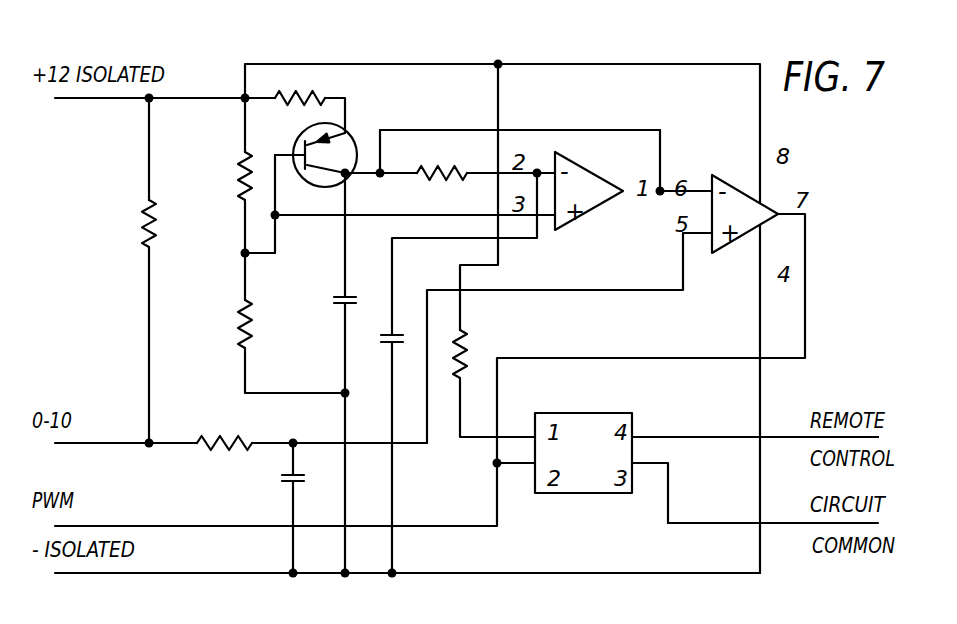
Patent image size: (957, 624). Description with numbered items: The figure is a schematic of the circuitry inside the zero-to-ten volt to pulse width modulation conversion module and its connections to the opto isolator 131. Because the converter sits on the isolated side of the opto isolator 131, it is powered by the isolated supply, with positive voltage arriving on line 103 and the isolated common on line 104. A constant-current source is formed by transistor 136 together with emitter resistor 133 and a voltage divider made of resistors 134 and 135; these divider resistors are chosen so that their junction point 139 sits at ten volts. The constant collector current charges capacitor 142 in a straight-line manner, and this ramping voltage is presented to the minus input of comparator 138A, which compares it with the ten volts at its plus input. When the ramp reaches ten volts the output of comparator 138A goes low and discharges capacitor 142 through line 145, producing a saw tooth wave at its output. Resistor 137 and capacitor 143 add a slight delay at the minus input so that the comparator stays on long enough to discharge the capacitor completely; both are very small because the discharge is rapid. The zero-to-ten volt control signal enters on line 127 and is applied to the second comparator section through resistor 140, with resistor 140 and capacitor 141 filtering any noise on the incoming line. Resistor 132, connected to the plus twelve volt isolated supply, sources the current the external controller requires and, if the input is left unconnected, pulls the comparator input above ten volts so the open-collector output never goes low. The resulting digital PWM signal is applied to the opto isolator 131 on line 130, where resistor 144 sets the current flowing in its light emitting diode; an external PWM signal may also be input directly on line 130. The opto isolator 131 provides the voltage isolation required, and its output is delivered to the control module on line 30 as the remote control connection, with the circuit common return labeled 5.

The positive voltage supply line 103 is at (78, 100).
The isolated common line 104 is at (262, 575).
The 0-10 volt input line 127 is at (118, 443).
The PWM signal line 130 is at (835, 268).
The opto isolator 131 is at (575, 413).
The current sourcing resistor 132 is at (148, 247).
The emitter resistor 133 is at (312, 96).
The voltage divider resistor 134 is at (242, 170).
The voltage divider resistor 135 is at (240, 335).
The transistor 136 is at (352, 130).
The delay resistor 137 is at (428, 178).
The comparator section 138A is at (815, 168).
The junction point 139 is at (243, 257).
The filter resistor 140 is at (198, 447).
The filter capacitor 141 is at (281, 481).
The ramp capacitor 142 is at (337, 295).
The delay capacitor 143 is at (387, 340).
The LED current resistor 144 is at (475, 352).
The discharge line 145 is at (612, 130).
The control module output line 30 is at (781, 437).
The circuit common line 5 is at (772, 524).